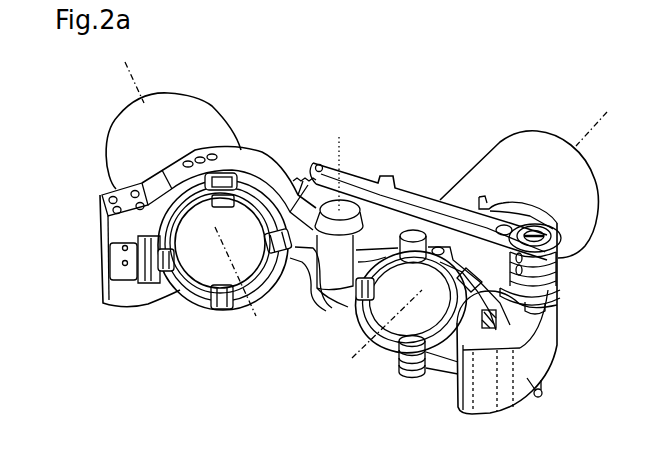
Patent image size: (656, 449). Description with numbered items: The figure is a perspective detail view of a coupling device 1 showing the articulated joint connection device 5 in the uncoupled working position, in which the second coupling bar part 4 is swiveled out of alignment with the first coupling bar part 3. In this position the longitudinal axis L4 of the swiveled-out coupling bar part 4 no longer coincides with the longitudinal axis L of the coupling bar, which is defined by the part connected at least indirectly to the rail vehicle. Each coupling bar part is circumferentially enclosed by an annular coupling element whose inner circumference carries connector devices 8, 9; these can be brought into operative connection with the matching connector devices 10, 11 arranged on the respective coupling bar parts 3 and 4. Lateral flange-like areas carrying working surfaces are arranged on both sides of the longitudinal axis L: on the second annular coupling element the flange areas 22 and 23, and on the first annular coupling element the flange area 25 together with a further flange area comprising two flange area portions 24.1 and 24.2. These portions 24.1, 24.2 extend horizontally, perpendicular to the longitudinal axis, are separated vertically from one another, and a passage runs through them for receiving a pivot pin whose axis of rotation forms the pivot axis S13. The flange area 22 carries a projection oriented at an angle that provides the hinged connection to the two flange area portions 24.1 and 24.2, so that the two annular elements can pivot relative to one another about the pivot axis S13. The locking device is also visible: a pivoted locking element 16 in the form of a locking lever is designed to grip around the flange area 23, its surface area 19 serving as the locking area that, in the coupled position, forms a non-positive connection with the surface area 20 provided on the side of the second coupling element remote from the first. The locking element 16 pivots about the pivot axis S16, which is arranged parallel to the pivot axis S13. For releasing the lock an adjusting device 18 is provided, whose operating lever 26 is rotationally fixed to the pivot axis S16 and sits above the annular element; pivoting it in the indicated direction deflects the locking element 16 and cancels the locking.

The coupling device 1 is at (428, 106).
The first coupling bar part 3 is at (480, 160).
The second coupling bar part 4 is at (174, 115).
The articulated joint connection device 5 is at (371, 108).
The connector device 8 is at (374, 350).
The connector device 9 is at (185, 298).
The connector device 10 is at (368, 330).
The connector device 11 is at (245, 300).
The locking element 16 is at (546, 388).
The adjusting device 18 is at (553, 216).
The surface area 19 is at (530, 349).
The surface area 20 is at (103, 264).
The flange area 22 is at (292, 183).
The flange area 23 is at (103, 228).
The flange area portion 24.1 is at (400, 190).
The flange area portion 24.2 is at (333, 290).
The flange area 25 is at (548, 298).
The operating lever 26 is at (565, 258).
The pivot axis S13 is at (338, 144).
The pivot axis S16 is at (560, 238).
The longitudinal axis L is at (585, 136).
The longitudinal axis L4 is at (133, 84).